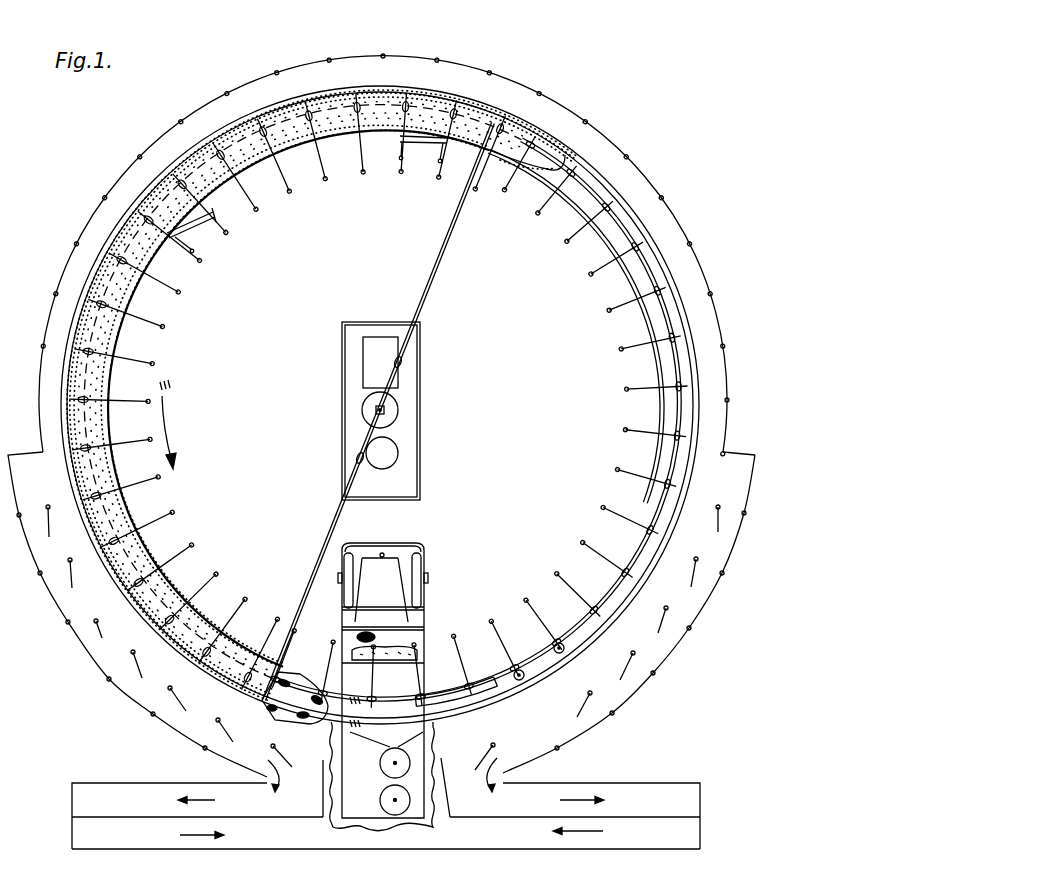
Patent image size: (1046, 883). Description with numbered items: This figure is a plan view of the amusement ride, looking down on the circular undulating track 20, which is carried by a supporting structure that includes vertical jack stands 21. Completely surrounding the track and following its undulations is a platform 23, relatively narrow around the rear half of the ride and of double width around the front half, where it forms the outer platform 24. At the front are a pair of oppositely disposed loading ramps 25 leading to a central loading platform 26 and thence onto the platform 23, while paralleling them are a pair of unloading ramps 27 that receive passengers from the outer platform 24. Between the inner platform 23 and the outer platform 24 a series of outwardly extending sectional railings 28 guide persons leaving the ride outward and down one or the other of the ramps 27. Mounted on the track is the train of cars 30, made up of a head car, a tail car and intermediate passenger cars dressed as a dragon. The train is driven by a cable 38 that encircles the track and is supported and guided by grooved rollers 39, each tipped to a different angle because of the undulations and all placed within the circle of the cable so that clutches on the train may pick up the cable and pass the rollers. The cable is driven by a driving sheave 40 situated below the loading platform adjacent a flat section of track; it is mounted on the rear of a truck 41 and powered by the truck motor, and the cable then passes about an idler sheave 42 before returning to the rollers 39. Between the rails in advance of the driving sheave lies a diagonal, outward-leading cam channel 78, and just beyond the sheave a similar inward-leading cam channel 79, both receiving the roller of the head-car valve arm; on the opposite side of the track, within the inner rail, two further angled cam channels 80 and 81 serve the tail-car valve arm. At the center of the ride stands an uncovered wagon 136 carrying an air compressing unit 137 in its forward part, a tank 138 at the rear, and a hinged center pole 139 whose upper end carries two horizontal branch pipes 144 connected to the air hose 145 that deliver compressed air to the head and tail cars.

The circular undulating track 20 is at (657, 459).
The vertical jack stands 21 is at (703, 280).
The platform 23 is at (672, 240).
The outer platform 24 is at (72, 610).
The loading ramps 25 is at (245, 840).
The central loading platform 26 is at (330, 820).
The unloading ramps 27 is at (125, 792).
The sectional railings 28 is at (665, 622).
The train of cars 30 is at (143, 557).
The cable 38 is at (515, 633).
The grooved rollers 39 is at (556, 643).
The driving sheave 40 is at (383, 757).
The truck 41 is at (423, 598).
The idler sheave 42 is at (386, 793).
The cam channel 78 is at (203, 610).
The cam channel 79 is at (453, 677).
The cam channel 80 is at (425, 142).
The cam channel 81 is at (197, 232).
The uncovered wagon 136 is at (420, 380).
The air compressing unit 137 is at (378, 338).
The tank 138 is at (392, 453).
The center pole 139 is at (400, 412).
The branch pipes 144 is at (395, 371).
The air hose 145 is at (452, 233).